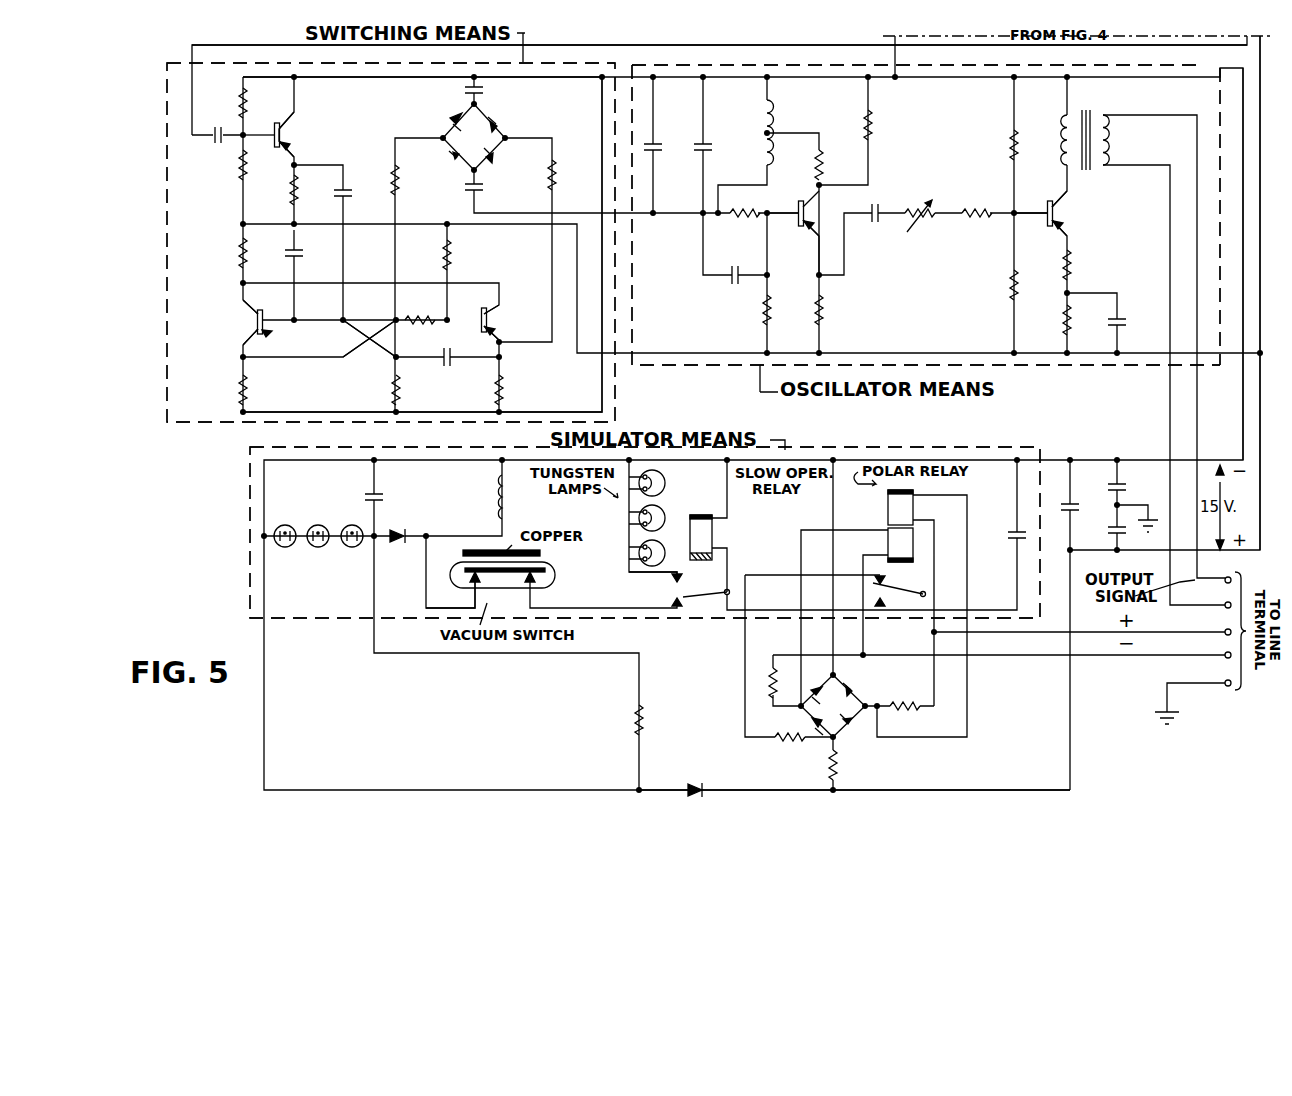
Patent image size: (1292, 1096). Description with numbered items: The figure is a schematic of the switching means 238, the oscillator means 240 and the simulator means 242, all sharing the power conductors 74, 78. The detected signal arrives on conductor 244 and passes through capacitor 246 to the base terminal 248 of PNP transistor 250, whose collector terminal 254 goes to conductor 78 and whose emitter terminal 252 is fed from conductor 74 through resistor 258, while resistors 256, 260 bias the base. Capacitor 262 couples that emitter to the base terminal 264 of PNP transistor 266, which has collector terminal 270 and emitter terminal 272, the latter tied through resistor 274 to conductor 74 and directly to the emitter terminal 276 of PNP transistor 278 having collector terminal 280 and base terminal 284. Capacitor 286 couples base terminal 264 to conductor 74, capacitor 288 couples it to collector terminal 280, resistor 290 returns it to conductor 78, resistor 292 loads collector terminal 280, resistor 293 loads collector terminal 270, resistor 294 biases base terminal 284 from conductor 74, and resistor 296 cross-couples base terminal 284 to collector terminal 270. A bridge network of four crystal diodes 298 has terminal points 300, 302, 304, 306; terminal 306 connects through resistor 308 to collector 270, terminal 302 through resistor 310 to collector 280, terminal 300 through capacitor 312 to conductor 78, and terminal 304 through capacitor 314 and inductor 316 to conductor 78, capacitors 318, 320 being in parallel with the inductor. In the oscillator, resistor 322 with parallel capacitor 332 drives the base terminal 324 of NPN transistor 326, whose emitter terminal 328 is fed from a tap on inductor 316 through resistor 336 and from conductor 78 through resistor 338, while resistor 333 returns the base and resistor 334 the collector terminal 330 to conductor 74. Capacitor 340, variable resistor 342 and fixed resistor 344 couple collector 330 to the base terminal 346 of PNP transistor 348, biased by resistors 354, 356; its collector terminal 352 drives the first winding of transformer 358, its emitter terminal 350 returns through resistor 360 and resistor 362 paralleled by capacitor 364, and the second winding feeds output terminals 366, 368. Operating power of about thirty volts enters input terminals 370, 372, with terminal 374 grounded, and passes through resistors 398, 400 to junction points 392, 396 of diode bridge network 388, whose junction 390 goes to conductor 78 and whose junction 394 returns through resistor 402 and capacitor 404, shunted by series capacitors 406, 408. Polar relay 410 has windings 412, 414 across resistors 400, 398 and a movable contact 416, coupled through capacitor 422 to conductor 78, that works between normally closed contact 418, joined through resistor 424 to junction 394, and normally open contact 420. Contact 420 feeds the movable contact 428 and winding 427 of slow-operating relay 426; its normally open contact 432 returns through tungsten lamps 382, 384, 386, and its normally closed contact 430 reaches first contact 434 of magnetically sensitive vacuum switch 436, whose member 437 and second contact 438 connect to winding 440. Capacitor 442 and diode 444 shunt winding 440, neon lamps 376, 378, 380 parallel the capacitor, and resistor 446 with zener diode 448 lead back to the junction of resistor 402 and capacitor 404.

The conductor 74 is at (633, 345).
The conductor 78 is at (285, 77).
The switching means 238 is at (164, 264).
The oscillator means 240 is at (1058, 367).
The simulator means 242 is at (248, 568).
The conductor 244 is at (192, 45).
The capacitor 246 is at (220, 118).
The base terminal 248 is at (274, 133).
The PNP transistor 250 is at (303, 134).
The emitter terminal 252 is at (302, 147).
The collector terminal 254 is at (298, 122).
The resistor 256 is at (240, 96).
The resistor 258 is at (291, 200).
The resistor 260 is at (238, 174).
The capacitor 262 is at (350, 197).
The base terminal 264 is at (263, 315).
The PNP transistor 266 is at (273, 341).
The collector terminal 270 is at (248, 337).
The emitter terminal 272 is at (244, 312).
The resistor 274 is at (238, 258).
The emitter terminal 276 is at (499, 307).
The PNP transistor 278 is at (473, 308).
The collector terminal 280 is at (496, 326).
The base terminal 284 is at (474, 322).
The capacitor 286 is at (306, 252).
The capacitor 288 is at (447, 368).
The resistor 290 is at (391, 391).
The resistor 292 is at (505, 389).
The resistor 293 is at (238, 391).
The resistor 294 is at (453, 257).
The resistor 296 is at (420, 316).
The bridge network of four crystal diodes 298 is at (501, 115).
The terminal point 300 is at (462, 114).
The terminal point 302 is at (501, 132).
The terminal point 304 is at (480, 168).
The terminal point 306 is at (445, 136).
The resistor 308 is at (404, 180).
The resistor 310 is at (554, 178).
The capacitor 312 is at (464, 90).
The capacitor 314 is at (458, 191).
The inductor 316 is at (760, 133).
The capacitor 318 is at (662, 151).
The capacitor 320 is at (693, 145).
The resistor 322 is at (750, 222).
The base terminal 324 is at (788, 210).
The NPN transistor 326 is at (791, 225).
The emitter terminal 328 is at (814, 206).
The collector terminal 330 is at (816, 248).
The capacitor 332 is at (736, 285).
The resistor 333 is at (773, 318).
The resistor 334 is at (825, 312).
The resistor 336 is at (838, 113).
The resistor 338 is at (874, 128).
The capacitor 340 is at (874, 223).
The variable resistor 342 is at (899, 206).
The fixed resistor 344 is at (976, 219).
The base terminal 346 is at (1046, 212).
The PNP transistor 348 is at (1039, 226).
The emitter terminal 350 is at (1073, 227).
The collector terminal 352 is at (1060, 205).
The resistor 354 is at (1010, 148).
The resistor 356 is at (1009, 288).
The transformer 358 is at (1094, 105).
The resistor 360 is at (1074, 266).
The resistor 362 is at (1064, 322).
The capacitor 364 is at (1124, 323).
The output terminal 366 is at (1224, 582).
The output terminal 368 is at (1224, 606).
The input terminal 370 is at (1224, 633).
The input terminal 372 is at (1224, 656).
The ground terminal 374 is at (1224, 684).
The neon lamp 376 is at (285, 525).
The neon lamp 378 is at (317, 525).
The neon lamp 380 is at (358, 510).
The tungsten lamp 382 is at (662, 474).
The tungsten lamp 384 is at (634, 518).
The tungsten lamp 386 is at (634, 553).
The diode bridge network 388 is at (875, 682).
The junction point 390 is at (834, 678).
The junction point 392 is at (871, 698).
The junction point 394 is at (842, 743).
The junction point 396 is at (801, 712).
The resistor 398 is at (908, 714).
The resistor 400 is at (768, 670).
The resistor 402 is at (842, 768).
The capacitor 404 is at (1085, 495).
The capacitor 406 is at (1122, 490).
The capacitor 408 is at (1110, 530).
The polar relay 410 is at (879, 521).
The winding 412 is at (887, 544).
The winding 414 is at (911, 508).
The movable contact 416 is at (880, 590).
The normally closed stationary contact 418 is at (883, 580).
The normally open stationary contact 420 is at (882, 600).
The capacitor 422 is at (1012, 539).
The resistor 424 is at (788, 745).
The slow-operating relay 426 is at (714, 508).
The winding 427 is at (705, 539).
The movable contact 428 is at (682, 597).
The normally closed stationary contact 430 is at (672, 596).
The normally open stationary contact 432 is at (678, 579).
The first contact 434 is at (486, 585).
The magnetically sensitive vacuum switch 436 is at (545, 587).
The magnetically sensitive member 437 is at (544, 572).
The second contact 438 is at (474, 598).
The winding 440 is at (496, 502).
The capacitor 442 is at (382, 498).
The diode 444 is at (394, 530).
The resistor 446 is at (634, 724).
The zener diode 448 is at (694, 785).